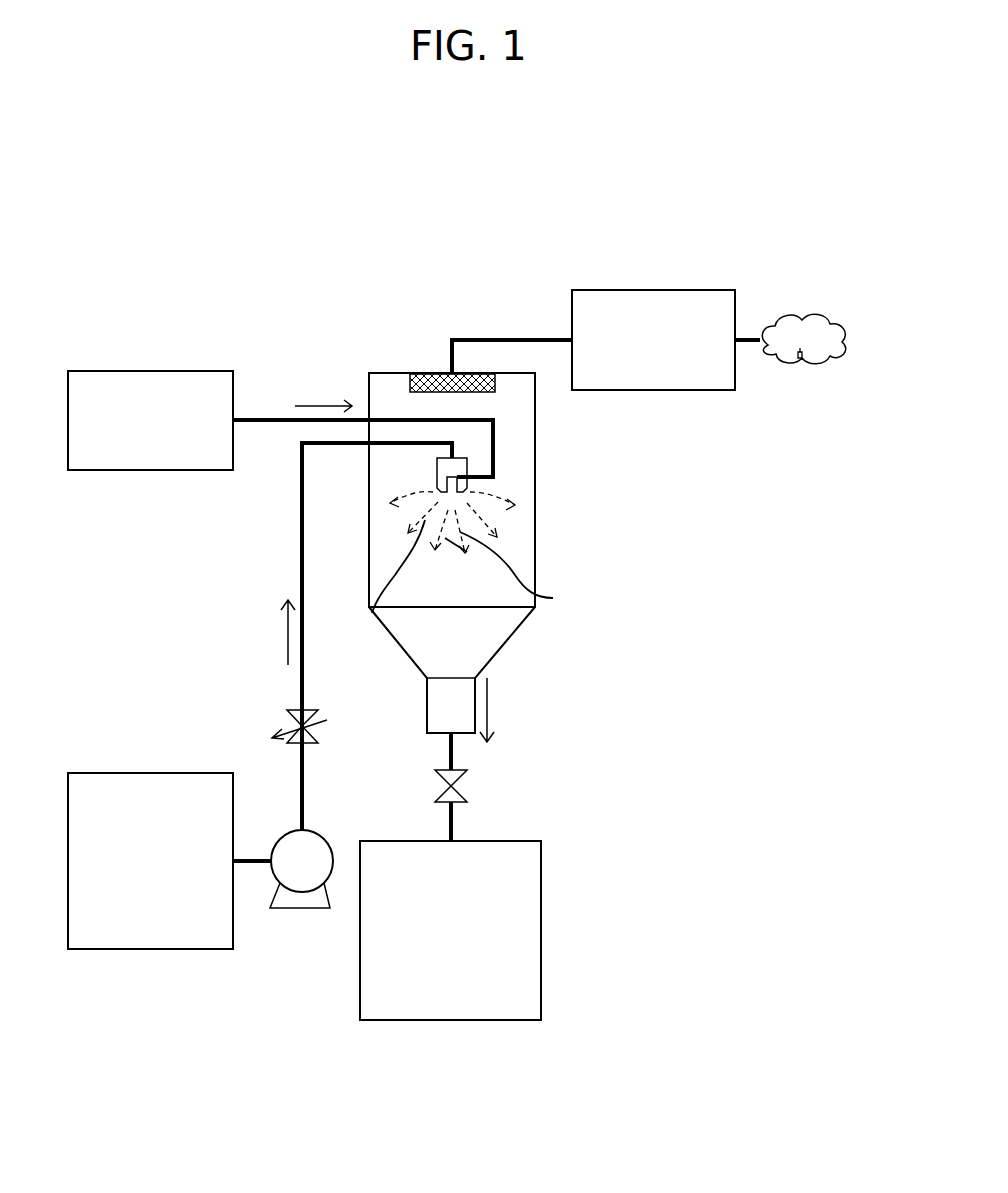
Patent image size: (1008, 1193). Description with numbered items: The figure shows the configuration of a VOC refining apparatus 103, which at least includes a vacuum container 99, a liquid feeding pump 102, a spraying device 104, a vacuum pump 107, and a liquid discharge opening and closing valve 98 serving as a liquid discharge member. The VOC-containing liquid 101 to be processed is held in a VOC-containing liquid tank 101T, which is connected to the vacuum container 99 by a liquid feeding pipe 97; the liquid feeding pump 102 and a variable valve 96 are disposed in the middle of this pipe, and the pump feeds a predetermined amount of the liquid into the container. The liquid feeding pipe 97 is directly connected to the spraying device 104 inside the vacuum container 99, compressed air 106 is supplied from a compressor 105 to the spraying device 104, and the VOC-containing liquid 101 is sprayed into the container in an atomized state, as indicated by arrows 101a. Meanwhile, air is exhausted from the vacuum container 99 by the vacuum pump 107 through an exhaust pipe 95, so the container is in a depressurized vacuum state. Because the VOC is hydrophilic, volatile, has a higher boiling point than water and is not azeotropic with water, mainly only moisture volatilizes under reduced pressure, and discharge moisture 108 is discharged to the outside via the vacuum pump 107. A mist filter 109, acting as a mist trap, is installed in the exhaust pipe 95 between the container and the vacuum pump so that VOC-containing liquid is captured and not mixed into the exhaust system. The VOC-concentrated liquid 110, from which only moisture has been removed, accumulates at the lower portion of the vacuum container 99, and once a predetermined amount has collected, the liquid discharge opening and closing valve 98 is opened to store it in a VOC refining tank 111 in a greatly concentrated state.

The exhaust pipe 95 is at (498, 340).
The variable valve 96 is at (298, 720).
The liquid feeding pipe 97 is at (300, 490).
The liquid discharge opening and closing valve 98 is at (467, 795).
The vacuum container 99 is at (535, 552).
The VOC-containing liquid 101 is at (85, 785).
The VOC-containing liquid tank 101T is at (175, 770).
The arrows 101a is at (373, 610).
The liquid feeding pump 102 is at (297, 910).
The VOC refining apparatus 103 is at (806, 280).
The spraying device 104 is at (467, 460).
The compressor 105 is at (145, 371).
The compressed air 106 is at (275, 418).
The vacuum pump 107 is at (660, 290).
The discharge moisture 108 is at (800, 365).
The mist filter 109 is at (432, 373).
The VOC-concentrated liquid 110 is at (487, 638).
The VOC refining tank 111 is at (530, 922).